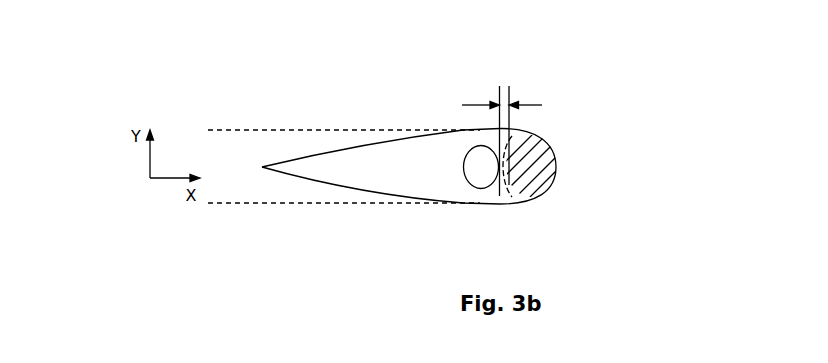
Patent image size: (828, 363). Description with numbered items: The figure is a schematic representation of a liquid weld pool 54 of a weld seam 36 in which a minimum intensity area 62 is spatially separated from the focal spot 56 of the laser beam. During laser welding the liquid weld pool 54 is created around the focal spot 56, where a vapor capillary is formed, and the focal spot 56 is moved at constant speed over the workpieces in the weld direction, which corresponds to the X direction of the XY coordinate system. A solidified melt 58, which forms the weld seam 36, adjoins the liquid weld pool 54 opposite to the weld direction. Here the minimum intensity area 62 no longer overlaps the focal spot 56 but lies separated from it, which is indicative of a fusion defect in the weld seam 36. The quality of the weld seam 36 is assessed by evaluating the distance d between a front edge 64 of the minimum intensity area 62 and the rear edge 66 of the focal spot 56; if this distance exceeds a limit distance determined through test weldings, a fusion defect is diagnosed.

The weld seam 36 is at (250, 130).
The solidified melt 58 is at (245, 198).
The liquid weld pool 54 is at (432, 182).
The focal spot 56 is at (556, 167).
The minimum intensity area 62 is at (480, 168).
The front edge 64 is at (509, 185).
The rear edge 66 is at (513, 137).